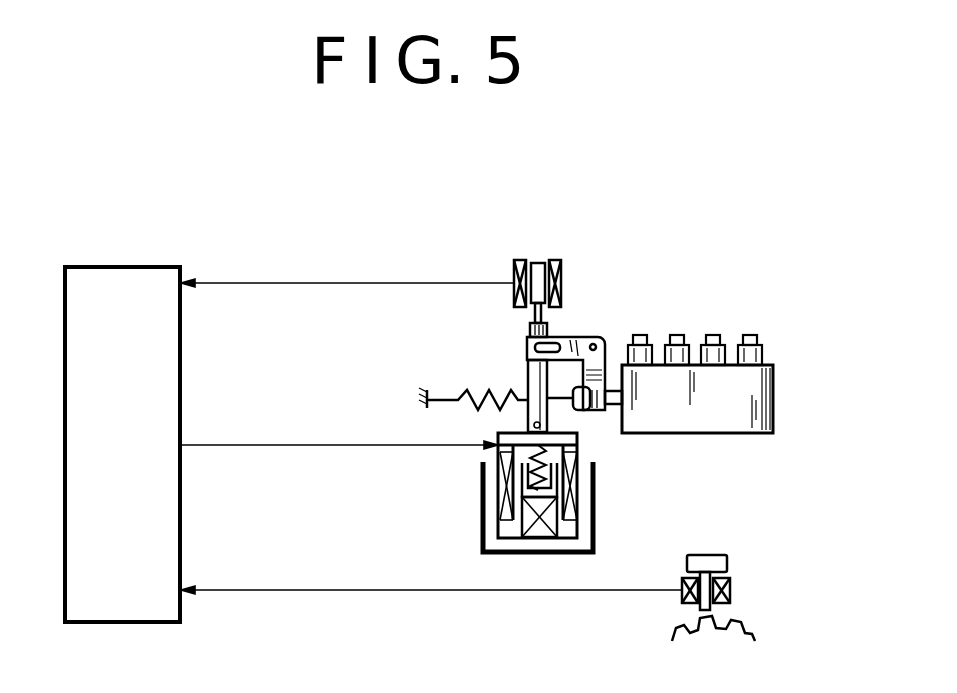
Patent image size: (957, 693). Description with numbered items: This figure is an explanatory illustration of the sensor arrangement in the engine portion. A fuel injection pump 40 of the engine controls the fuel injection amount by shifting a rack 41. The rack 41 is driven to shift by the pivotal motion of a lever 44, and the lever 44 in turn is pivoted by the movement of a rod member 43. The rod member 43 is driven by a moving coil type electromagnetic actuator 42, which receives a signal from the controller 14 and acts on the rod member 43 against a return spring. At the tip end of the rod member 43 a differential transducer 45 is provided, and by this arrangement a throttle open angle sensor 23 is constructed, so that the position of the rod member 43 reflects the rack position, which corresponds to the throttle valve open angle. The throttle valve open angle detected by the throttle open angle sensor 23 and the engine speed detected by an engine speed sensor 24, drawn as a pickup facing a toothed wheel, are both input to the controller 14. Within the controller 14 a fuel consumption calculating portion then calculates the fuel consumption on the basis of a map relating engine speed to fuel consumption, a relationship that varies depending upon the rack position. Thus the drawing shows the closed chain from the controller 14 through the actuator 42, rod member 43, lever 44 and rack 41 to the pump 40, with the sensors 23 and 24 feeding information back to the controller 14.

The controller 14 is at (170, 372).
The throttle open angle sensor 23 is at (541, 250).
The engine speed sensor 24 is at (738, 588).
The fuel injection pump 40 is at (724, 418).
The rack 41 is at (608, 415).
The moving coil type electromagnetic actuator 42 is at (497, 494).
The rod member 43 is at (528, 372).
The lever 44 is at (585, 337).
The differential transducer 45 is at (514, 273).